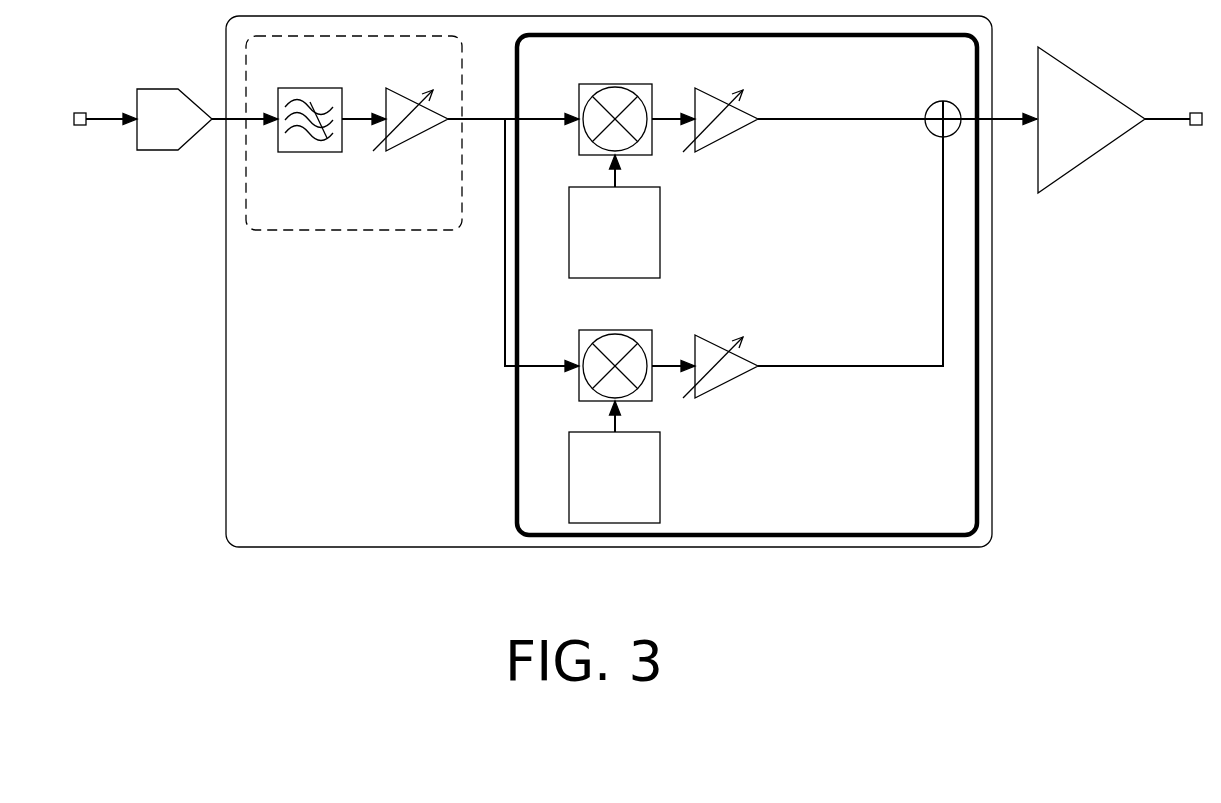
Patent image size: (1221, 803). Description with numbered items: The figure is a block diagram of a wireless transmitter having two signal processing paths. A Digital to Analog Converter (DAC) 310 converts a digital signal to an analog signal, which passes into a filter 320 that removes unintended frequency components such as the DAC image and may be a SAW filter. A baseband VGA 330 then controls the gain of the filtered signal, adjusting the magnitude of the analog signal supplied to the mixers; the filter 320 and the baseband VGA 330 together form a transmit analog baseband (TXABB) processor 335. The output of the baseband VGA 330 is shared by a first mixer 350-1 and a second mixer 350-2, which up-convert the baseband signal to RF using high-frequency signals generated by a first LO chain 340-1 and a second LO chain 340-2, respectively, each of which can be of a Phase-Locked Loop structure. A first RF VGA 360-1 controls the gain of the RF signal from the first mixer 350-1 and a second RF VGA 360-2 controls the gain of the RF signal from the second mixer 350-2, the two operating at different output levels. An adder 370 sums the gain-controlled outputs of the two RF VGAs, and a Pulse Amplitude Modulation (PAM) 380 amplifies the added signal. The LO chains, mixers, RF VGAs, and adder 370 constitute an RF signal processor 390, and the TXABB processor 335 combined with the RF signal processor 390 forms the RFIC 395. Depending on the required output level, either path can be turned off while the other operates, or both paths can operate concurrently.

The Digital to Analog Converter (DAC) 310 is at (160, 88).
The filter 320 is at (312, 87).
The baseband VGA 330 is at (421, 134).
The transmit analog baseband (TXABB) processor 335 is at (420, 231).
The first LO chain 340-1 is at (661, 230).
The second LO chain 340-2 is at (661, 477).
The first mixer 350-1 is at (637, 69).
The second mixer 350-2 is at (637, 315).
The first RF VGA 360-1 is at (727, 135).
The second RF VGA 360-2 is at (727, 382).
The adder 370 is at (938, 102).
The Pulse Amplitude Modulation (PAM) 380 is at (1093, 84).
The RF signal processor 390 is at (978, 310).
The RFIC 395 is at (225, 228).